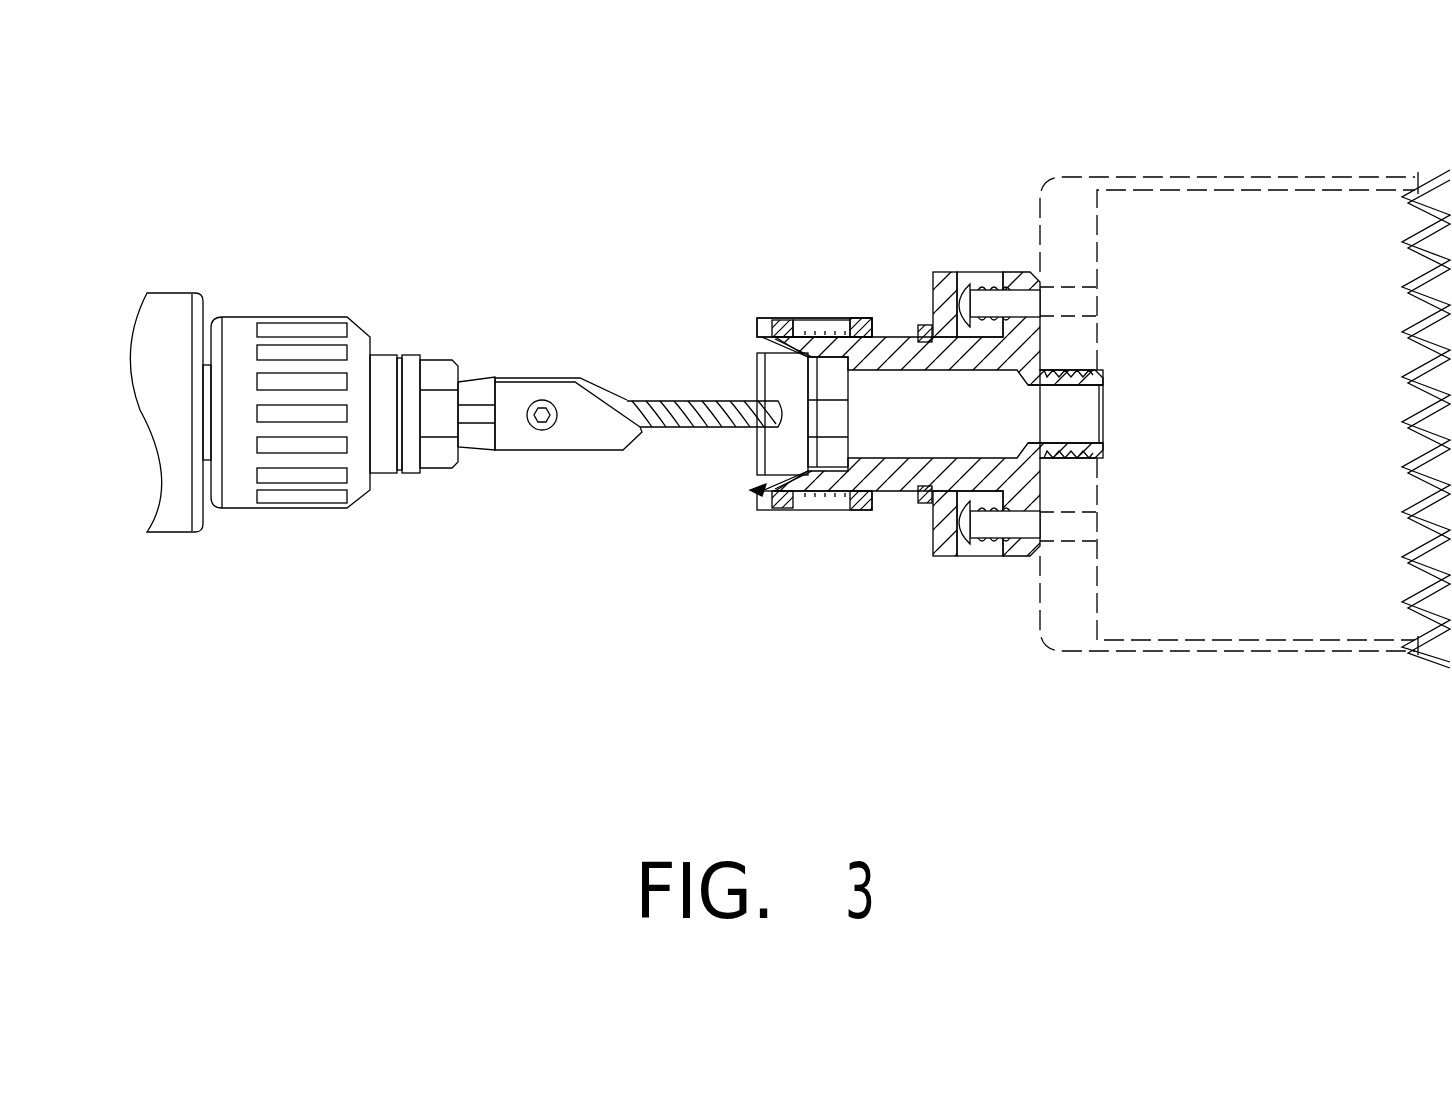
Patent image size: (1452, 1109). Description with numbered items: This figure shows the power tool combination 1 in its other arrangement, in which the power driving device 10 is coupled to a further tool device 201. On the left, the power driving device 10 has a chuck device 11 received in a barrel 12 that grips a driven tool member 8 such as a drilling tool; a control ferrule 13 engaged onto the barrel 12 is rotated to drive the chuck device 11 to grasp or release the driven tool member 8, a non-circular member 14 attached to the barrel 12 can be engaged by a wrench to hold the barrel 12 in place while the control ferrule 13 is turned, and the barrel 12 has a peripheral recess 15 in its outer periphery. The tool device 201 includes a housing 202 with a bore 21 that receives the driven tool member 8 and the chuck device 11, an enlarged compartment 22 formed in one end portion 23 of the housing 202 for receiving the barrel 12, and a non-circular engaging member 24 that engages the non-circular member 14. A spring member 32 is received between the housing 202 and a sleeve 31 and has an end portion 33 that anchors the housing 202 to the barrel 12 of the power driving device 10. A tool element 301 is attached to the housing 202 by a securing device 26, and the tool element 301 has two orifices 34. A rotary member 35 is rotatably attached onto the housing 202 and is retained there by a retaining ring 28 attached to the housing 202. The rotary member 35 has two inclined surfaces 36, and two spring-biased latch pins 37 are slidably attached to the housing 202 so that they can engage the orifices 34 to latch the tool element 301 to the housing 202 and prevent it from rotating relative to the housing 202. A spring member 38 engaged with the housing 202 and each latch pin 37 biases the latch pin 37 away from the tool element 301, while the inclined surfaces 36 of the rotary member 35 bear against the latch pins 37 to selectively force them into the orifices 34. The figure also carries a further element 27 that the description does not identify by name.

The power tool combination 1 is at (623, 243).
The driven tool member 8 is at (670, 400).
The power driving device 10 is at (153, 242).
The chuck device 11 is at (477, 436).
The barrel 12 is at (380, 365).
The control ferrule 13 is at (253, 502).
The non-circular member 14 is at (437, 372).
The peripheral recess 15 is at (395, 473).
The bore 21 is at (1088, 425).
The enlarged compartment 22 is at (775, 452).
The end portion 23 is at (757, 492).
The non-circular engaging member 24 is at (820, 413).
The securing device 26 is at (1085, 363).
The lower outer thread 27 is at (1098, 462).
The retaining ring 28 is at (917, 507).
The sleeve 31 is at (862, 317).
The spring member 32 is at (818, 323).
The end portion 33 is at (768, 327).
The orifices 34 is at (1076, 287).
The rotary member 35 is at (947, 273).
The inclined surfaces 36 is at (975, 553).
The latch pins 37 is at (990, 300).
The spring member 38 is at (983, 543).
The tool device 201 is at (920, 172).
The housing 202 is at (832, 505).
The tool element 301 is at (1347, 220).